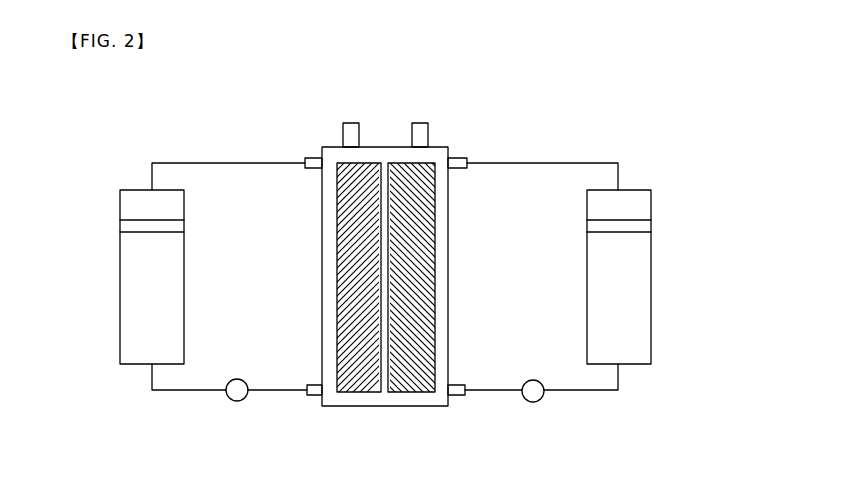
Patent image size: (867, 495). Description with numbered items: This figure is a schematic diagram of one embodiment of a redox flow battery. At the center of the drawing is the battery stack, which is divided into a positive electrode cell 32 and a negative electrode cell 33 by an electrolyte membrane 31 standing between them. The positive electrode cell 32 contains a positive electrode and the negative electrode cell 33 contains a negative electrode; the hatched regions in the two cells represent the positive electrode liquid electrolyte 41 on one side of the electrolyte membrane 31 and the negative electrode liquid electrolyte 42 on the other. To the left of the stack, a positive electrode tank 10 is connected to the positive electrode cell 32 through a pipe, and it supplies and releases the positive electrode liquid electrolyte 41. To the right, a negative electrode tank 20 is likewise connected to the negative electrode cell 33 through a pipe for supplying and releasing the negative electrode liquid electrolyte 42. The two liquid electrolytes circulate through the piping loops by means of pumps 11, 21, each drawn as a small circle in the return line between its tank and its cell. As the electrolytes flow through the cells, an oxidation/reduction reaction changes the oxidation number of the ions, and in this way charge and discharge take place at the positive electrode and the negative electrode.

The positive electrode tank 10 is at (120, 290).
The pump 11 is at (237, 401).
The negative electrode tank 20 is at (651, 290).
The pump 21 is at (533, 402).
The electrolyte membrane 31 is at (384, 147).
The positive electrode cell 32 is at (350, 406).
The negative electrode cell 33 is at (415, 406).
The positive electrode liquid electrolyte 41 is at (358, 347).
The negative electrode liquid electrolyte 42 is at (432, 293).